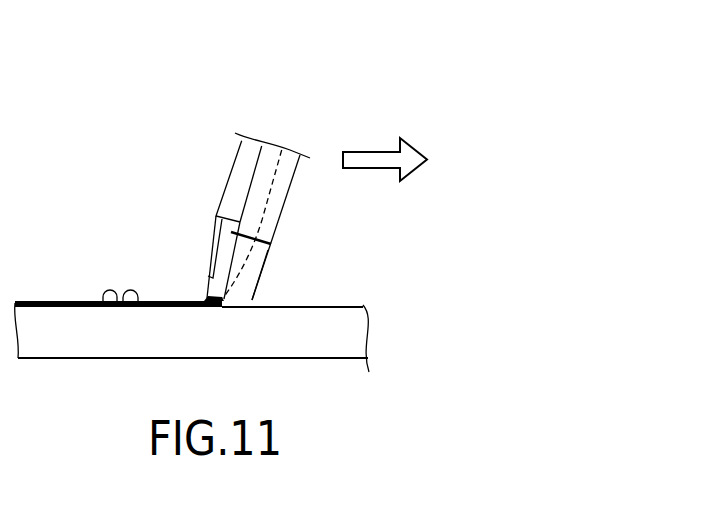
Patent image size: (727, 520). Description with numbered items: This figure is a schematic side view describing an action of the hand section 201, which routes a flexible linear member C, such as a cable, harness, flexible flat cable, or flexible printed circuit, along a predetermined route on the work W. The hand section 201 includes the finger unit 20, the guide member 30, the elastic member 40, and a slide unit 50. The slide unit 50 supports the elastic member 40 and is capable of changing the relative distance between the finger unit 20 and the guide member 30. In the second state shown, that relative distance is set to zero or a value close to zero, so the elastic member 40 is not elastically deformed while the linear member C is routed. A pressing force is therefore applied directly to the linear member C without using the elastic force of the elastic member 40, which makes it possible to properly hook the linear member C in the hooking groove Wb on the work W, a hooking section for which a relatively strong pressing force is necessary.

The hand section 201 is at (287, 157).
The finger unit 20 is at (286, 198).
The guide member 30 is at (260, 278).
The elastic member 40 is at (212, 252).
The slide unit 50 is at (228, 170).
The work W is at (340, 306).
The linear member C is at (55, 300).
The hooking groove Wb is at (120, 294).